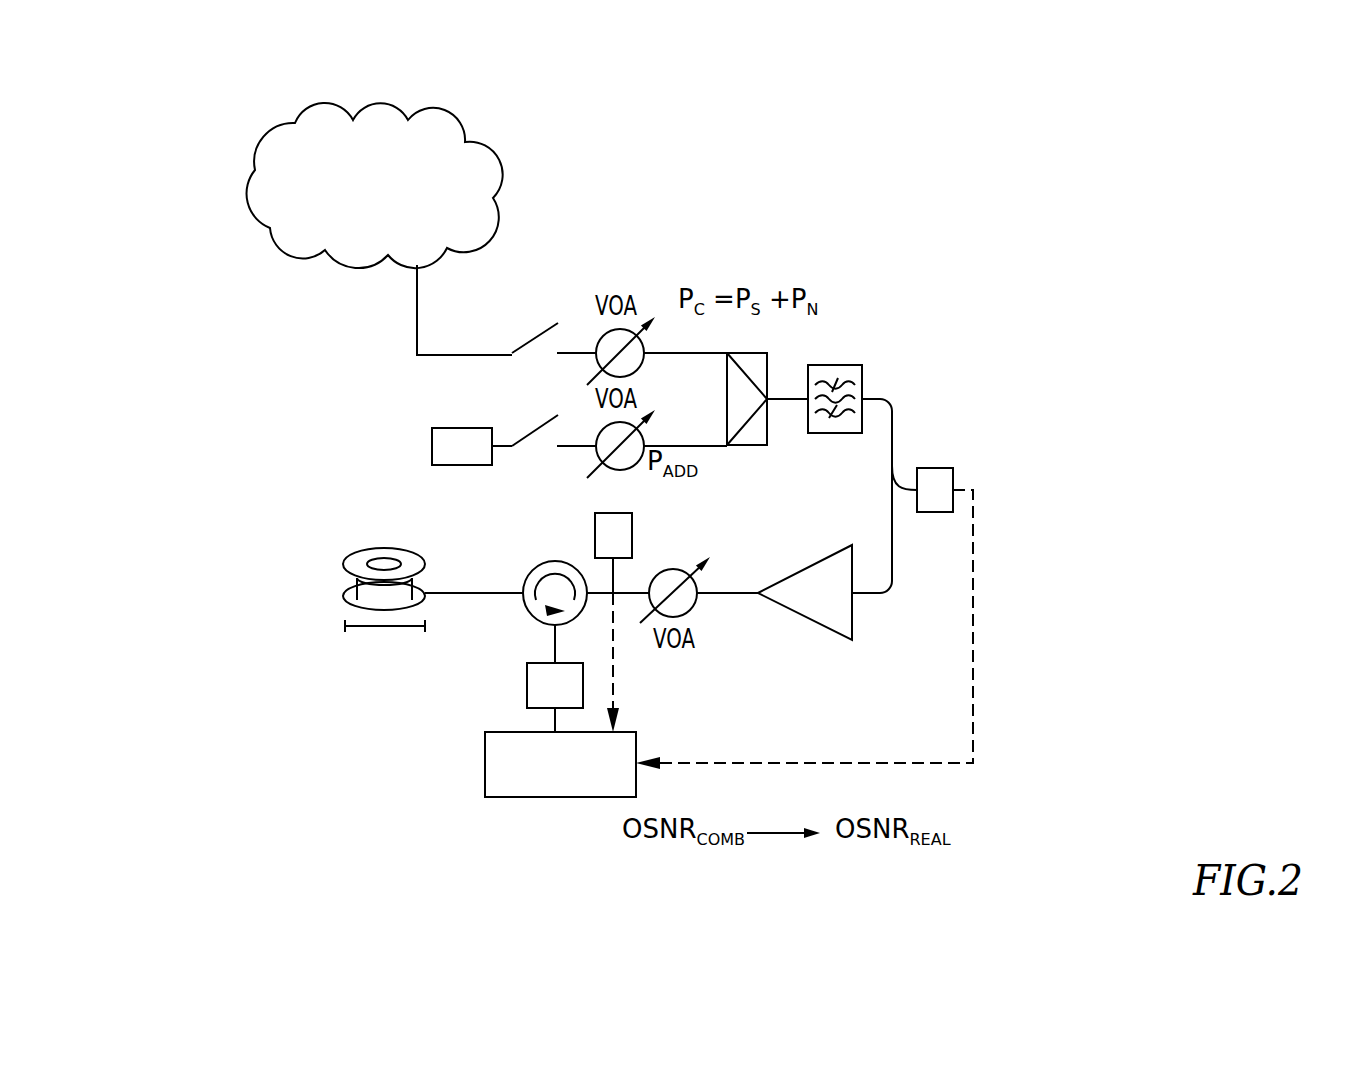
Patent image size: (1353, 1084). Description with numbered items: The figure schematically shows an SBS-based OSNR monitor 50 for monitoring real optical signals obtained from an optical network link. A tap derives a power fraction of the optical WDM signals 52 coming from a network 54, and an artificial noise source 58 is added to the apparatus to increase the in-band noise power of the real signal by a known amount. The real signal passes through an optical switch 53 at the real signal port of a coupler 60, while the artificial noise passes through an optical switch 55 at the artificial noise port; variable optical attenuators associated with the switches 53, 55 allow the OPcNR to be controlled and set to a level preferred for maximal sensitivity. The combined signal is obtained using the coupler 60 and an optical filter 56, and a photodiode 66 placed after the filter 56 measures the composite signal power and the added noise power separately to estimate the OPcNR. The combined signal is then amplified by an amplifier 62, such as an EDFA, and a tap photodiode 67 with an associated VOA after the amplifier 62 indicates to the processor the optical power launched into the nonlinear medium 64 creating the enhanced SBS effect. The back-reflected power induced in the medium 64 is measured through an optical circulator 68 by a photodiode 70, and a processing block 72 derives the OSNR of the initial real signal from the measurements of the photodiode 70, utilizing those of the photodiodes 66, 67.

The OSNR monitor 50 is at (792, 203).
The optical WDM signals 52 is at (417, 313).
The optical switch 53 is at (531, 339).
The network 54 is at (443, 114).
The optical switch 55 is at (531, 430).
The optical filter 56 is at (862, 365).
The artificial noise source 58 is at (432, 443).
The coupler 60 is at (745, 447).
The amplifier 62 is at (807, 570).
The medium 64 is at (385, 562).
The photodiode 66 is at (935, 468).
The photodiode 67 is at (616, 512).
The optical circulator 68 is at (523, 597).
The photodiode 70 is at (527, 672).
The processing block 72 is at (560, 764).